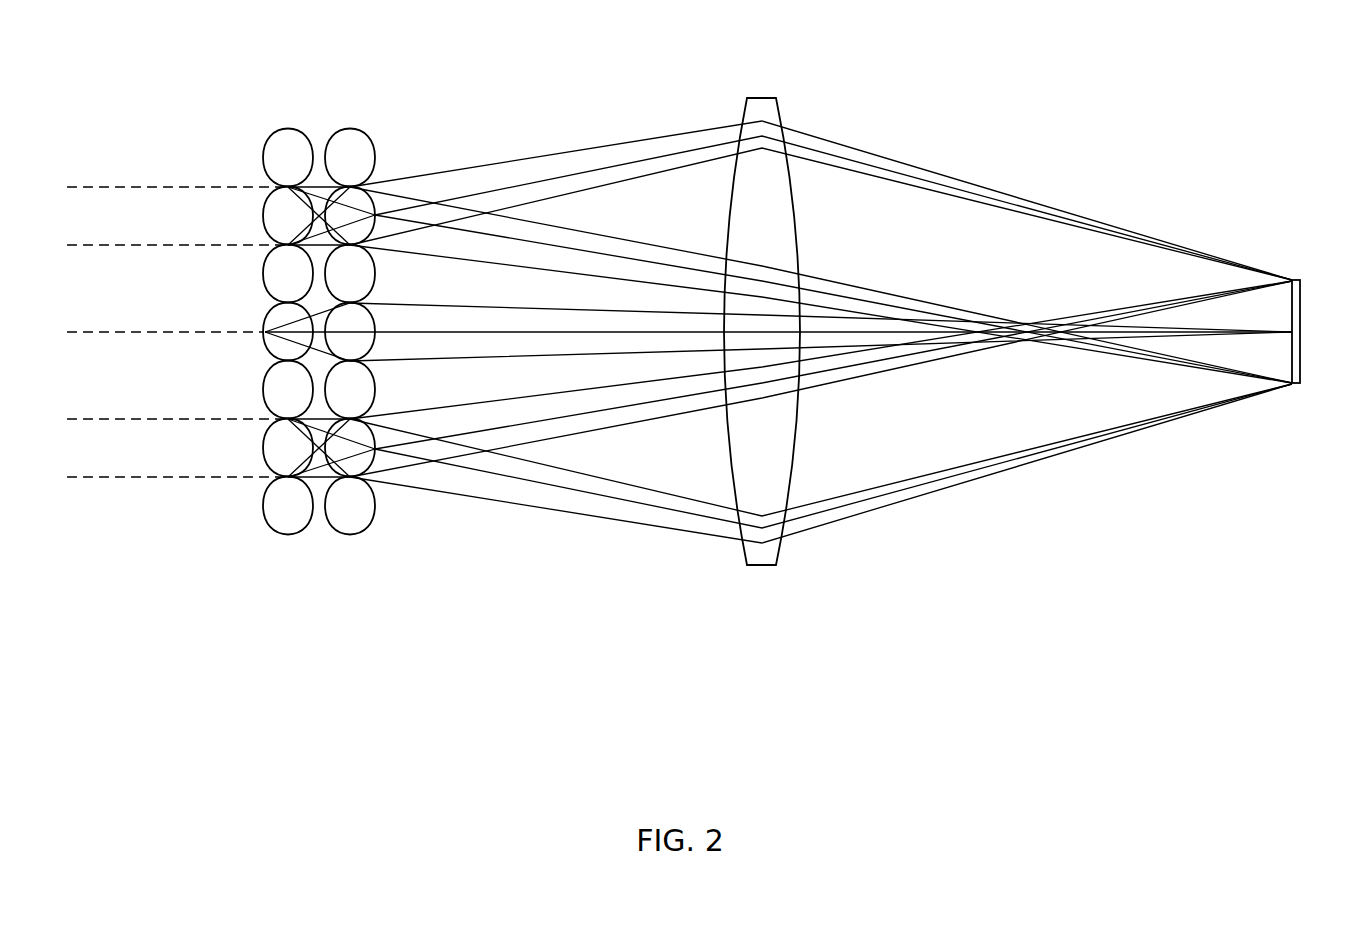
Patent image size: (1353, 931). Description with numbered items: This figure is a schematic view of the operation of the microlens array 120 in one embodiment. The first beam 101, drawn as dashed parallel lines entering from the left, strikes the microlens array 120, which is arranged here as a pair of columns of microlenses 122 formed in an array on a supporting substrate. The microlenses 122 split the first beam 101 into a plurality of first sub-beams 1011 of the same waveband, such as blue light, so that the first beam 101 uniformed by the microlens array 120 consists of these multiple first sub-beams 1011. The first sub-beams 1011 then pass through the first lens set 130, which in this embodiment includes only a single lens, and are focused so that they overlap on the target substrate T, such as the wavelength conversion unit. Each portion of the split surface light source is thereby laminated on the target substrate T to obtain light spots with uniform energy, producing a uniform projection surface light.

The first beam 101 is at (177, 186).
The microlens array 120 is at (319, 355).
The microlens 122 is at (288, 534).
The first lens set 130 is at (778, 108).
The first sub-beams 1011 is at (870, 153).
The target substrate T is at (1298, 294).